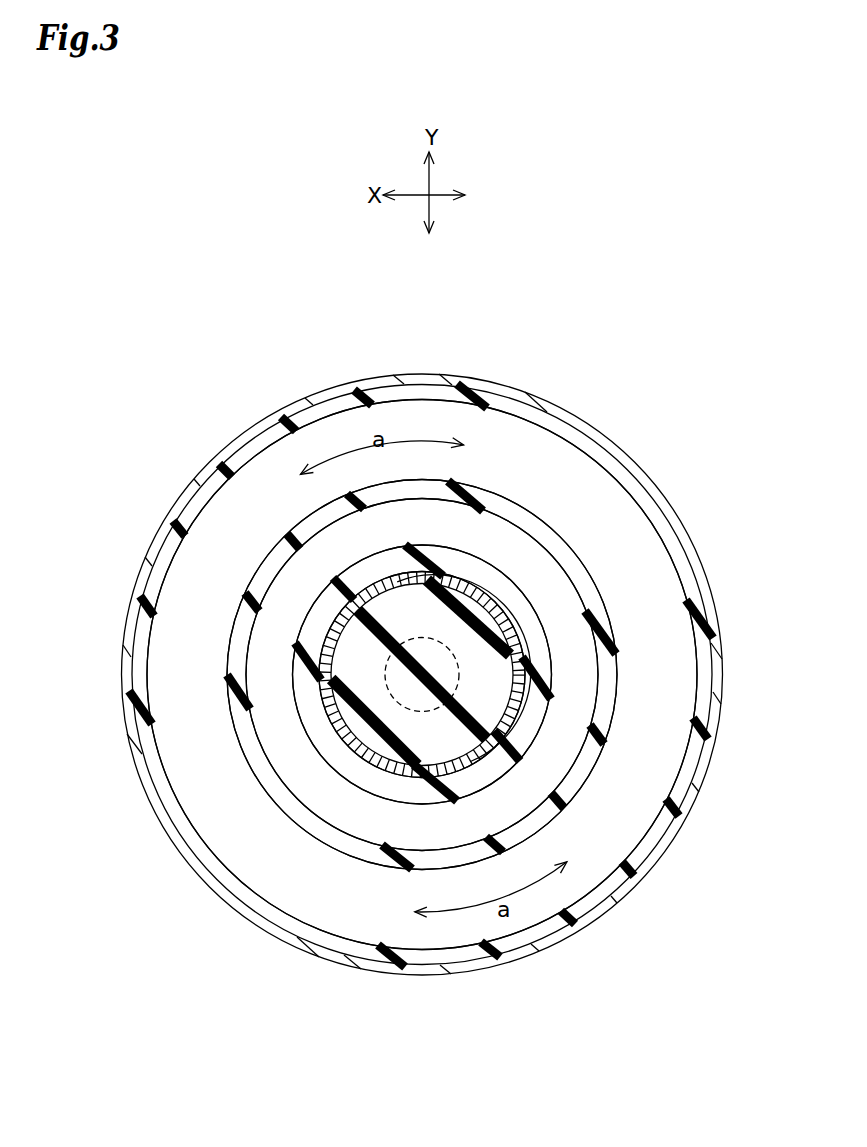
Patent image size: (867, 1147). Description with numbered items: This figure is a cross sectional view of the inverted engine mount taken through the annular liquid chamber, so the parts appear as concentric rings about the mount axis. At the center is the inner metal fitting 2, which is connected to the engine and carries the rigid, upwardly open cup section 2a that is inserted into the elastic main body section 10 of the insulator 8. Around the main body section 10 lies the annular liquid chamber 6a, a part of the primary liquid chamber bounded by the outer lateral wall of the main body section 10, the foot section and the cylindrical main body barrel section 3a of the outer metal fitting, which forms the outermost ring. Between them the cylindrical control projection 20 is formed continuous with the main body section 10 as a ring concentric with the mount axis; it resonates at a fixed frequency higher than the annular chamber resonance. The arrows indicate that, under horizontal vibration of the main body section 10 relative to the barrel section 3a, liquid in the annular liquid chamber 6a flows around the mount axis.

The inner metal fitting 2 is at (457, 673).
The cup section 2a is at (492, 723).
The main body barrel section 3a is at (155, 542).
The annular liquid chamber 6a is at (198, 752).
The insulator 8 is at (533, 593).
The main body section 10 is at (546, 633).
The control projection 20 is at (235, 638).